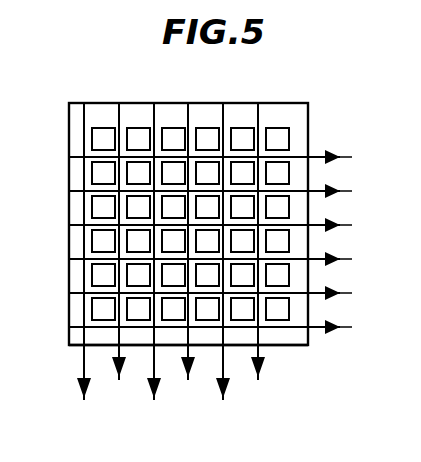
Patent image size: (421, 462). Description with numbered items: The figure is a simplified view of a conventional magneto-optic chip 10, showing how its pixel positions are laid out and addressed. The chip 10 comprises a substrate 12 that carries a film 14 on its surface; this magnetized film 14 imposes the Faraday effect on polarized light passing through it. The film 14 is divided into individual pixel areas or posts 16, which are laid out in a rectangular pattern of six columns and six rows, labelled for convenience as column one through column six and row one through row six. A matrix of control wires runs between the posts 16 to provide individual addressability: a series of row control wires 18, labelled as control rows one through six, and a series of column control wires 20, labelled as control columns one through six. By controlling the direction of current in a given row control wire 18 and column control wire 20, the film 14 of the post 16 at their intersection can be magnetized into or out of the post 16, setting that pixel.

The chip 10 is at (344, 114).
The substrate 12 is at (310, 112).
The film 14 is at (295, 142).
The posts 16 is at (277, 137).
The row control wires 18 is at (313, 345).
The column control wires 20 is at (260, 354).